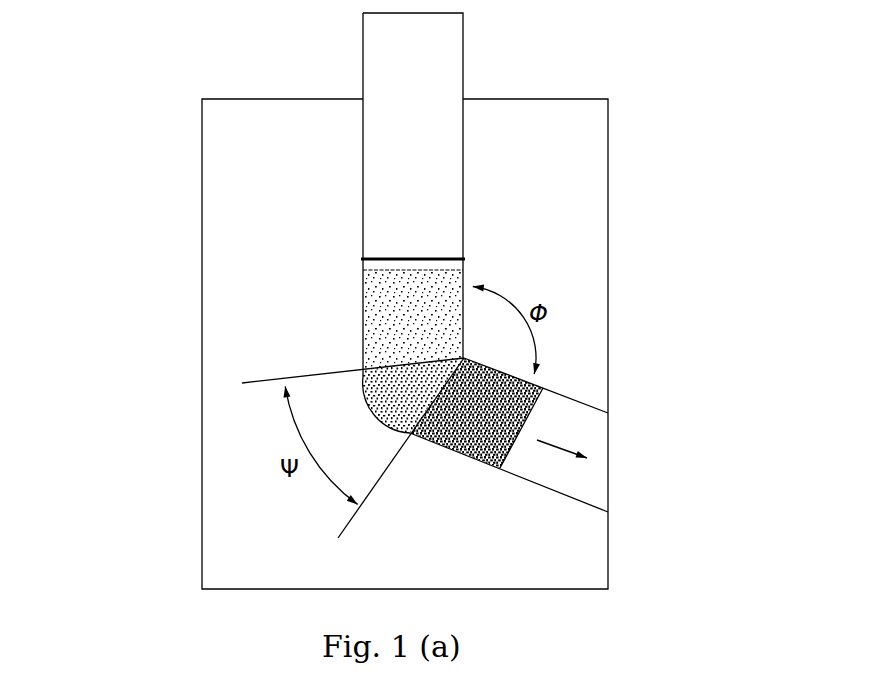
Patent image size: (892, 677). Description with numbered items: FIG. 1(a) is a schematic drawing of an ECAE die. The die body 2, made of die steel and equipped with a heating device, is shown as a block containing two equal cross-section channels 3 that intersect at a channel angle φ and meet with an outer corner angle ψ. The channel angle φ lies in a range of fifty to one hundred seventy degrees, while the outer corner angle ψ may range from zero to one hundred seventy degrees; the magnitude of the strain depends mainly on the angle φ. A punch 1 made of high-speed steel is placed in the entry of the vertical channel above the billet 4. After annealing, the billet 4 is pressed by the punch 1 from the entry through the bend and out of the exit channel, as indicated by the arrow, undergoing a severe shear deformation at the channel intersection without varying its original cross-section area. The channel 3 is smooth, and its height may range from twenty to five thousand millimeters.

The punch 1 is at (377, 73).
The die body 2 is at (227, 200).
The equal channel 3 is at (445, 182).
The billet 4 is at (443, 452).